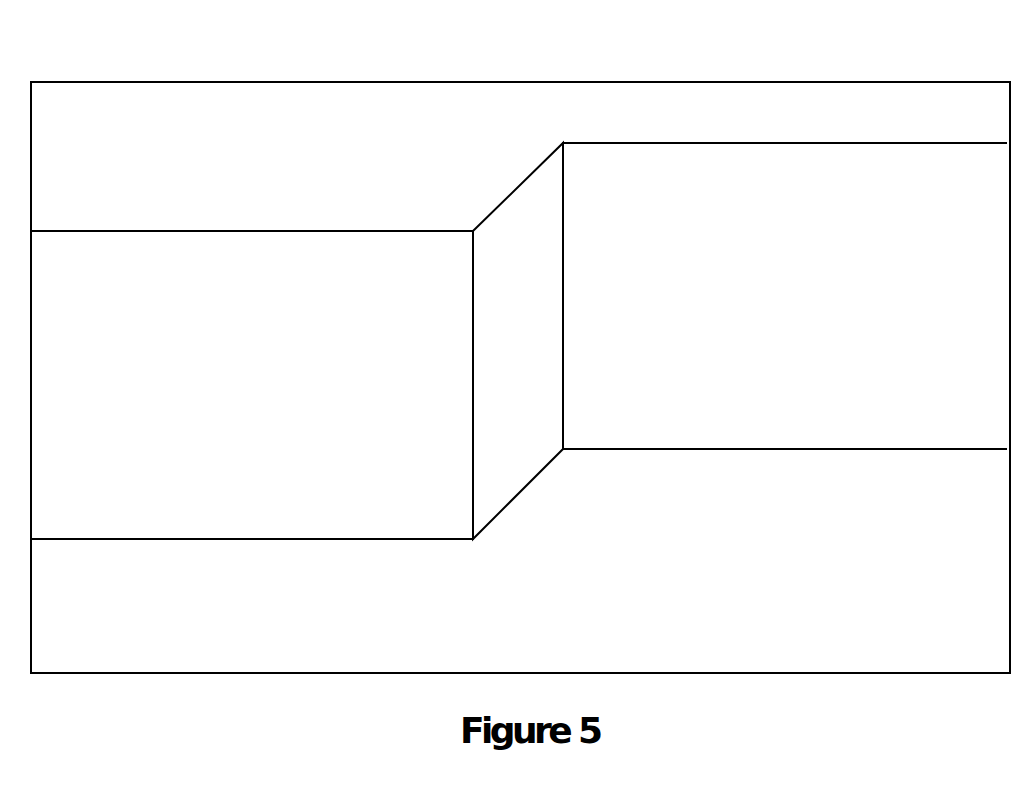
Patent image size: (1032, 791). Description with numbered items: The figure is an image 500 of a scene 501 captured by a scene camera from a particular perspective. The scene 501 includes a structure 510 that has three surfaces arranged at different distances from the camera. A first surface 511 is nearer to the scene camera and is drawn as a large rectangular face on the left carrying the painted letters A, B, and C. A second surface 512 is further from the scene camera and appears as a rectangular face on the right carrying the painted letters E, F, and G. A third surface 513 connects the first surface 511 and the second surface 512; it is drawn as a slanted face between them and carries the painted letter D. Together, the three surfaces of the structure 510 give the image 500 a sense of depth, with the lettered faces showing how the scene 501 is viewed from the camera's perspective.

The image 500 is at (553, 82).
The scene 501 is at (97, 122).
The structure 510 is at (237, 230).
The first surface 511 is at (432, 271).
The second surface 512 is at (628, 182).
The third surface 513 is at (540, 242).